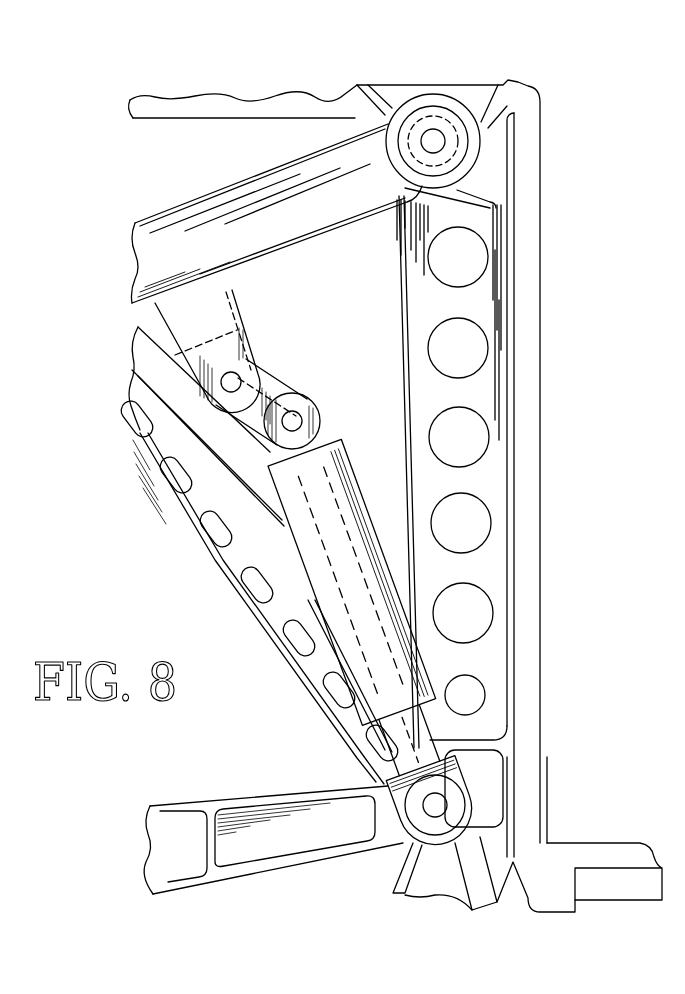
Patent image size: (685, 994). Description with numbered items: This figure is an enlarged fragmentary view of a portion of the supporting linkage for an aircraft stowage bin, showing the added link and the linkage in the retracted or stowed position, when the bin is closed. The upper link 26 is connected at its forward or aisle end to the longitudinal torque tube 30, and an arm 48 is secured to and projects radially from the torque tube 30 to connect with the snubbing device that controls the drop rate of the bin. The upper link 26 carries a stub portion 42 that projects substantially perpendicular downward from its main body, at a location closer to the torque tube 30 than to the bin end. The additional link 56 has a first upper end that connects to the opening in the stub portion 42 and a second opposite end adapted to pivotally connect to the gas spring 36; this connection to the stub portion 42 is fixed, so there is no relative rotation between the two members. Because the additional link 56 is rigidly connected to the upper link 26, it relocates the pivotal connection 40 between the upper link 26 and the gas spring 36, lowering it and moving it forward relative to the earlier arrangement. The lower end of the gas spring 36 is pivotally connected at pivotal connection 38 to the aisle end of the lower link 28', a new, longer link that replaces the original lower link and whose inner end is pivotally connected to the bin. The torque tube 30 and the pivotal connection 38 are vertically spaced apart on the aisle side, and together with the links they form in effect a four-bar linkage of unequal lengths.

The arm 48 is at (372, 85).
The upper link 26 is at (190, 233).
The torque tube 30 is at (455, 152).
The stub portion 42 is at (215, 333).
The additional link 56 is at (267, 382).
The pivotal connection 40 is at (293, 421).
The gas spring 36 is at (288, 488).
The lower link 28' is at (273, 819).
The pivotal connection 38 is at (435, 805).